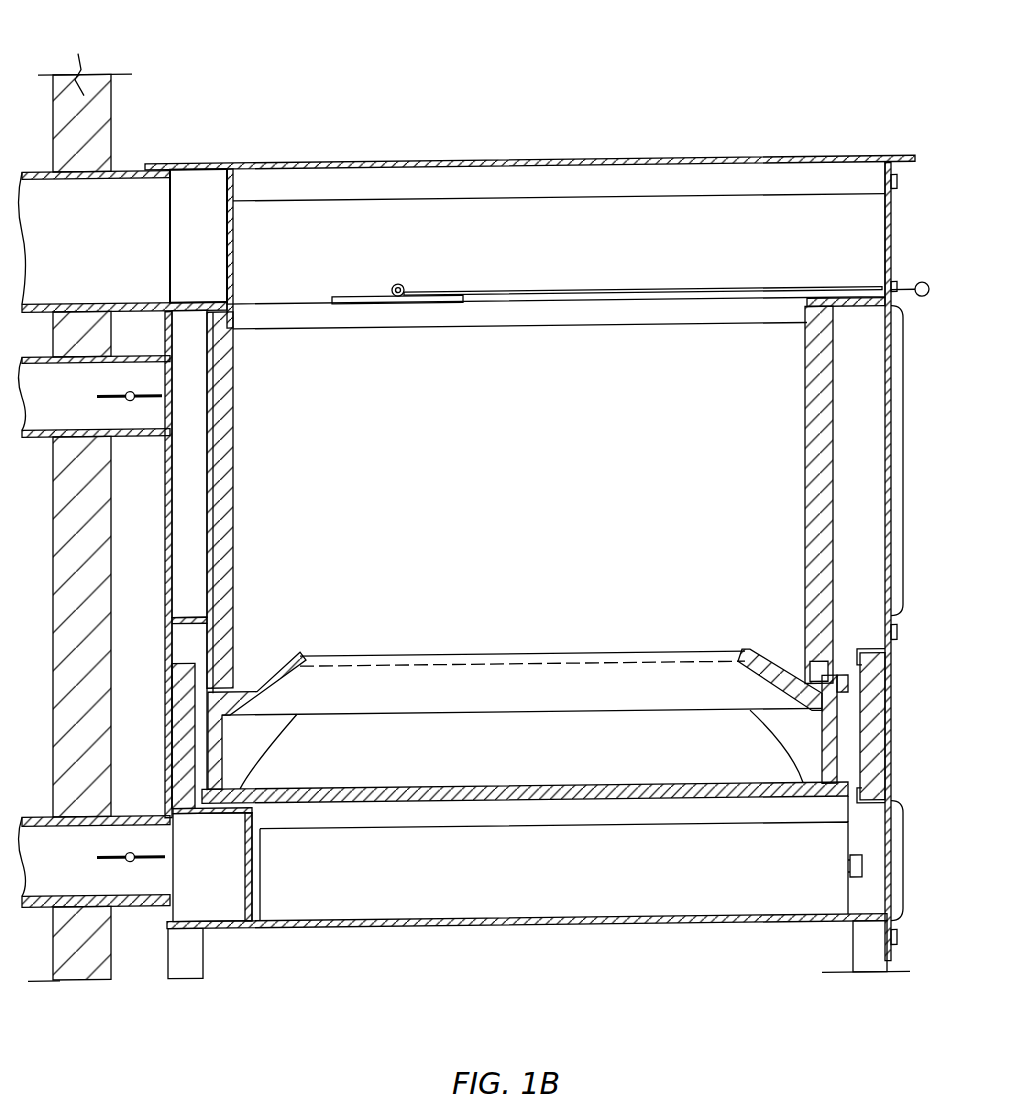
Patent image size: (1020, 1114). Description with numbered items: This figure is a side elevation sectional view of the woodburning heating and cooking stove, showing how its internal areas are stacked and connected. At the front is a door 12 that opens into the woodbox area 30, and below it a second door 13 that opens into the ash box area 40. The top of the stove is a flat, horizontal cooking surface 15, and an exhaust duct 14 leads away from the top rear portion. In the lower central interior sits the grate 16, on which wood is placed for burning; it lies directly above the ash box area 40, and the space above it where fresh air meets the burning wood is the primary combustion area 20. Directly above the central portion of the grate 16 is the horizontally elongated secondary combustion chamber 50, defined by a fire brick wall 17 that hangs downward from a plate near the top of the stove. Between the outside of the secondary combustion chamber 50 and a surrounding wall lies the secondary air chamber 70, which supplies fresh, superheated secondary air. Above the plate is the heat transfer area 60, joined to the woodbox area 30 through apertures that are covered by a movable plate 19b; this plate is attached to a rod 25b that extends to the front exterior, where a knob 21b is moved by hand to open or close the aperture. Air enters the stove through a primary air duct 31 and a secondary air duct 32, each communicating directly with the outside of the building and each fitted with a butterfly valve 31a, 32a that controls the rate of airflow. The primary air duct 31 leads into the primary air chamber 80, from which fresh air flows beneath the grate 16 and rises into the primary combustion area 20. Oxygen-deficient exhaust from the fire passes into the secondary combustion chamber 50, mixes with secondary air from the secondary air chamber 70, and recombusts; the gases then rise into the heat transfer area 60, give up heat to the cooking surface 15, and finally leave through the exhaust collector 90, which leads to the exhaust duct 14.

The door 12 is at (895, 377).
The second door 13 is at (900, 840).
The exhaust duct 14 is at (106, 253).
The cooking surface 15 is at (455, 163).
The grate 16 is at (597, 789).
The fire brick wall 17 is at (233, 437).
The movable plate 19b is at (345, 298).
The primary combustion area 20 is at (523, 768).
The knob 21b is at (921, 289).
The rod 25b is at (612, 294).
The woodbox area 30 is at (866, 496).
The primary air duct 31 is at (72, 870).
The butterfly valve 31a is at (123, 848).
The secondary air duct 32 is at (72, 408).
The butterfly valve 32a is at (160, 389).
The ash box area 40 is at (553, 910).
The secondary combustion chamber 50 is at (548, 500).
The heat transfer area 60 is at (752, 188).
The secondary air chamber 70 is at (192, 546).
The primary air chamber 80 is at (222, 885).
The exhaust collector 90 is at (206, 190).